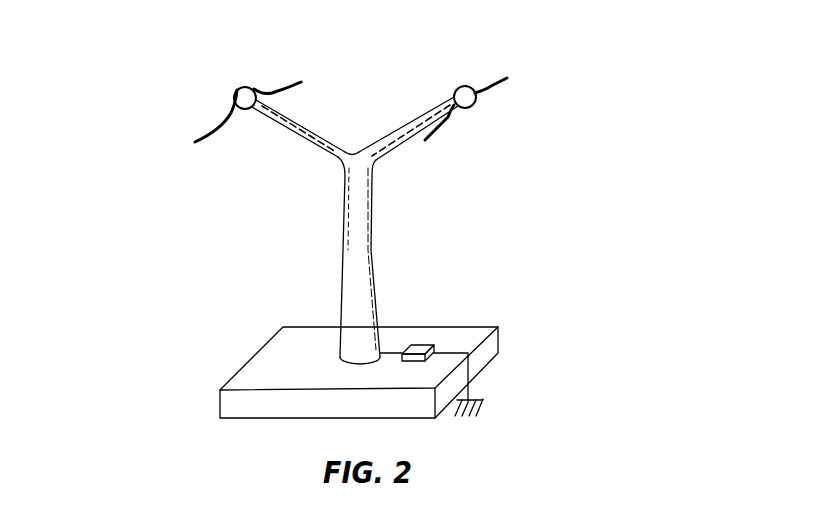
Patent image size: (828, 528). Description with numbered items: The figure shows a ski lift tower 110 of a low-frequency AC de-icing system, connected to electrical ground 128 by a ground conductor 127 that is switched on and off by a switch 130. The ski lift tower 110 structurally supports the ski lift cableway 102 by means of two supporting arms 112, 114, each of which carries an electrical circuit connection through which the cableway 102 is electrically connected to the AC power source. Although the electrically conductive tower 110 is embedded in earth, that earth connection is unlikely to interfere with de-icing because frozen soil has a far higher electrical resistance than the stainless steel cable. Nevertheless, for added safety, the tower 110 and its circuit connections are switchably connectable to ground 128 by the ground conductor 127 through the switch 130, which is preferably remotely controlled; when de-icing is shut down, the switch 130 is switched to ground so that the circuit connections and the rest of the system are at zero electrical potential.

The ski lift cableway 102 is at (208, 135).
The ski lift tower 110 is at (372, 235).
The supporting arm 112 is at (422, 117).
The supporting arm 114 is at (300, 127).
The ground conductor 127 is at (458, 353).
The electrical ground 128 is at (484, 402).
The switch 130 is at (422, 347).